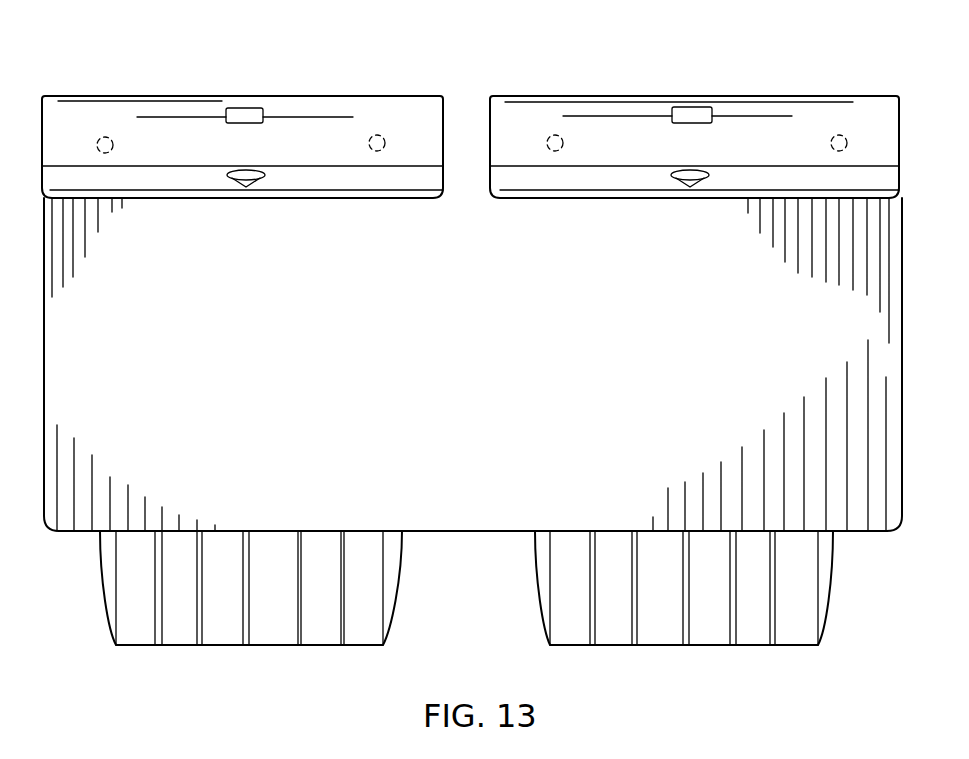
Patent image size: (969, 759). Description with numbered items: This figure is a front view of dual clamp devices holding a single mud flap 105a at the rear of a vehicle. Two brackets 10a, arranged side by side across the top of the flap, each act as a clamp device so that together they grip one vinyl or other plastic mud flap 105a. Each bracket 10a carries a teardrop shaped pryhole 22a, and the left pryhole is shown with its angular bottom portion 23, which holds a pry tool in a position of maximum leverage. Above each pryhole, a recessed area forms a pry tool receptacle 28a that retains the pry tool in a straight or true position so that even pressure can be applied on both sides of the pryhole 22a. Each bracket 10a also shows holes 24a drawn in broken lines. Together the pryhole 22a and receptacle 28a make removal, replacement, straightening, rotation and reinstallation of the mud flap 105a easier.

The mud flap 105a is at (506, 377).
The bracket 10a is at (342, 94).
The pry tool receptacle 28a is at (243, 106).
The mounting hole 24a is at (102, 136).
The teardrop shaped pryhole 22a is at (253, 183).
The angular bottom portion 23 is at (237, 185).